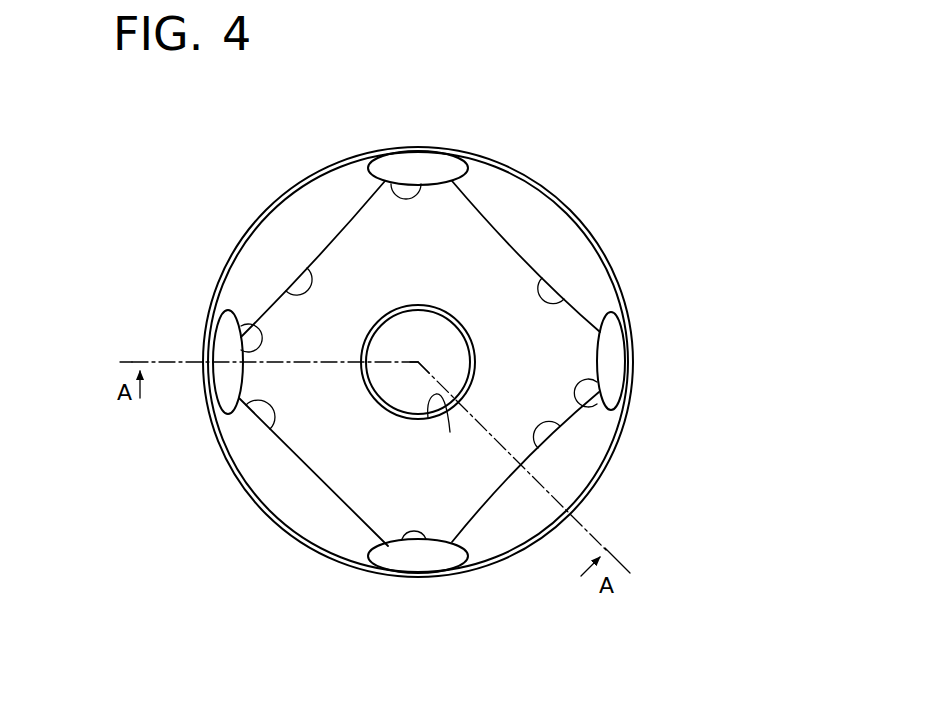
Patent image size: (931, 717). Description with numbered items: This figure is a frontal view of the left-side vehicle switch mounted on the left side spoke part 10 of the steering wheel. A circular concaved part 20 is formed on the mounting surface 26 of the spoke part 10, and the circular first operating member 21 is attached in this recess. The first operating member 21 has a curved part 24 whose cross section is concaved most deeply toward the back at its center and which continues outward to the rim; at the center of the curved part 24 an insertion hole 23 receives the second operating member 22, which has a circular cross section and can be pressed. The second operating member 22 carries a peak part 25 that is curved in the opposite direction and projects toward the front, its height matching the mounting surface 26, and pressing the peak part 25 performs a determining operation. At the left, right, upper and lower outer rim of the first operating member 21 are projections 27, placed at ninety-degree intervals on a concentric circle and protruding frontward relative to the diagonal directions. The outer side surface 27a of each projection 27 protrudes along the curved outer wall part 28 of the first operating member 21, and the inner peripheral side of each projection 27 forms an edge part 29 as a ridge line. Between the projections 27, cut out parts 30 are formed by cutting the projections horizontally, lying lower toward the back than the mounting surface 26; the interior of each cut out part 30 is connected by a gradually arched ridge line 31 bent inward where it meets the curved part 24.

The left side spoke part 10 is at (502, 362).
The circular concaved part 20 is at (579, 495).
The first operating member 21 is at (470, 237).
The second operating member 22 is at (397, 382).
The insertion hole 23 is at (450, 432).
The curved part 24 is at (524, 364).
The peak part 25 is at (424, 358).
The mounting surface 26 is at (634, 332).
The projection 27 is at (432, 163).
The outer side surface 27a is at (457, 156).
The curved outer wall part 28 is at (483, 108).
The edge part 29 is at (419, 184).
The cut out part 30 is at (298, 218).
The ridge line 31 is at (303, 274).